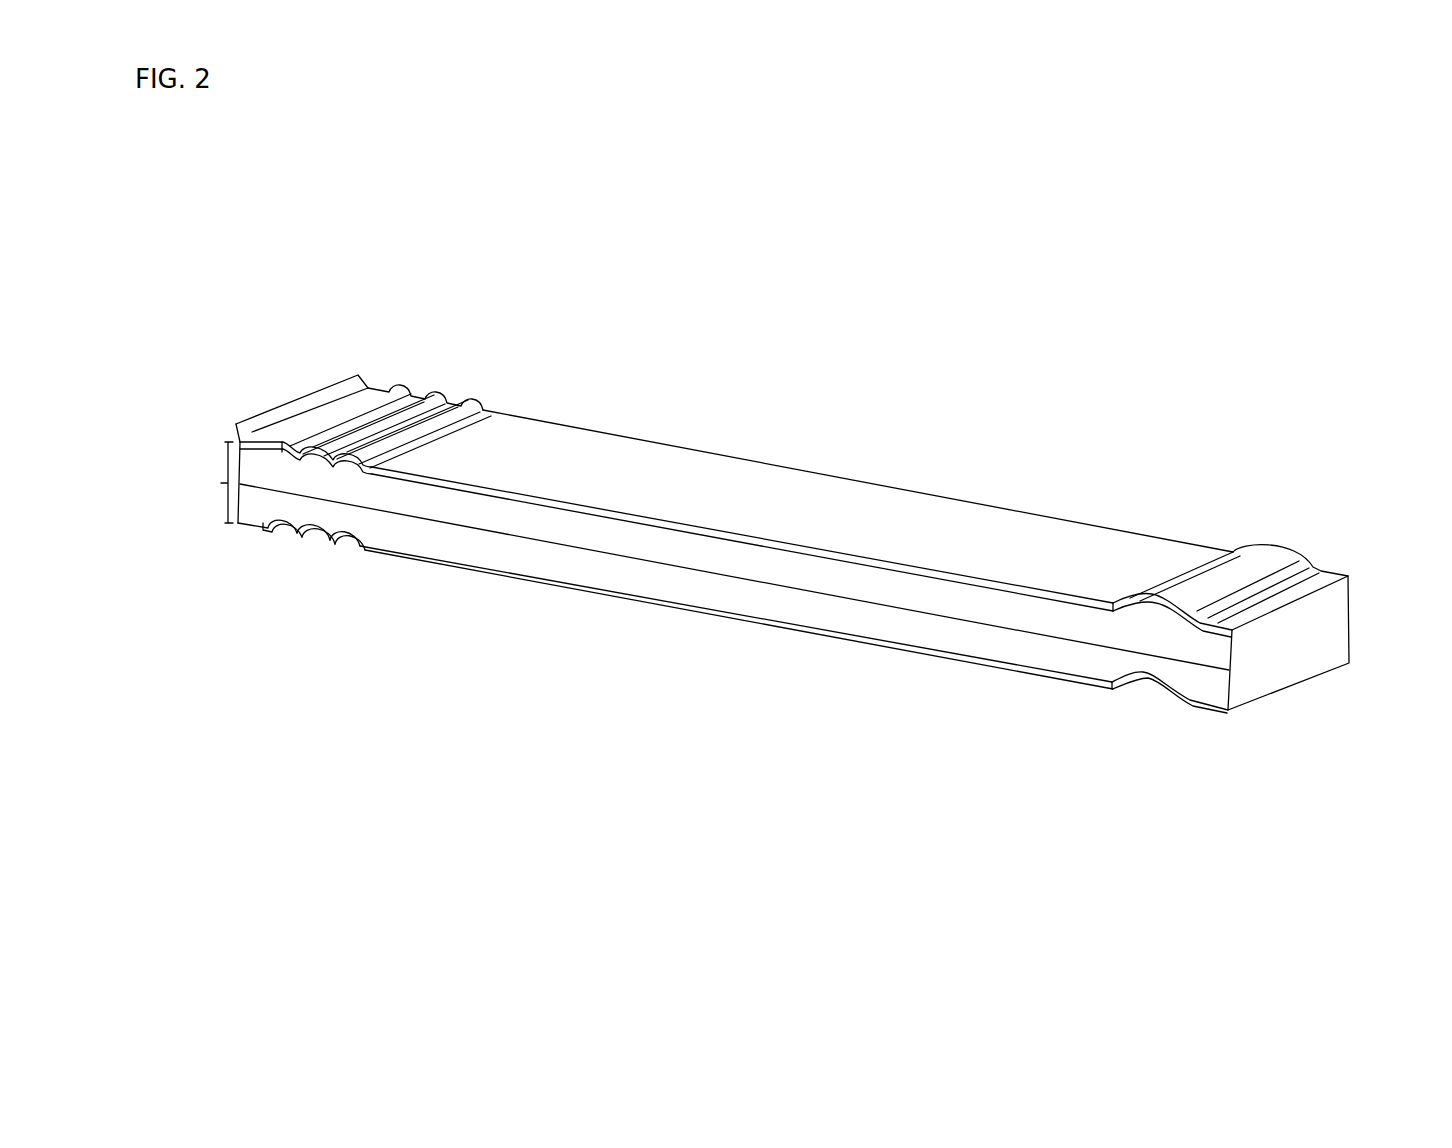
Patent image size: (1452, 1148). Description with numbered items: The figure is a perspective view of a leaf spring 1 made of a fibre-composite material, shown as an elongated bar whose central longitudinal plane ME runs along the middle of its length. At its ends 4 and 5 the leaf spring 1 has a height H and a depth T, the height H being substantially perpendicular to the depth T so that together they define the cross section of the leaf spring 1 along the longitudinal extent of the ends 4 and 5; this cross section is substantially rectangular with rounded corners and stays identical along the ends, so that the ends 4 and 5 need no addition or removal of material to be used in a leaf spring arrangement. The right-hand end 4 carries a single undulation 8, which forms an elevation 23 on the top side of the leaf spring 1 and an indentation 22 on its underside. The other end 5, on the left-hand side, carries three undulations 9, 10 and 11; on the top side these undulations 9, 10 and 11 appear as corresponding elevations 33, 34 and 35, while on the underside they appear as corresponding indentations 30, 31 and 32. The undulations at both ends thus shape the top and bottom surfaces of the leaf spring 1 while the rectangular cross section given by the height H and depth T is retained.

The leaf spring 1 is at (597, 765).
The right-hand end 4 is at (1360, 442).
The other end 5 is at (383, 298).
The undulation 8 is at (1295, 553).
The undulation 9 is at (402, 376).
The undulation 10 is at (443, 395).
The undulation 11 is at (483, 405).
The indentation 22 is at (1142, 710).
The elevation 23 is at (1273, 532).
The indentation 30 is at (265, 551).
The indentation 31 is at (311, 556).
The indentation 32 is at (358, 559).
The elevation 33 is at (405, 387).
The elevation 34 is at (429, 378).
The elevation 35 is at (486, 392).
The central longitudinal plane ME is at (907, 605).
The depth T is at (297, 403).
The height H is at (211, 482).